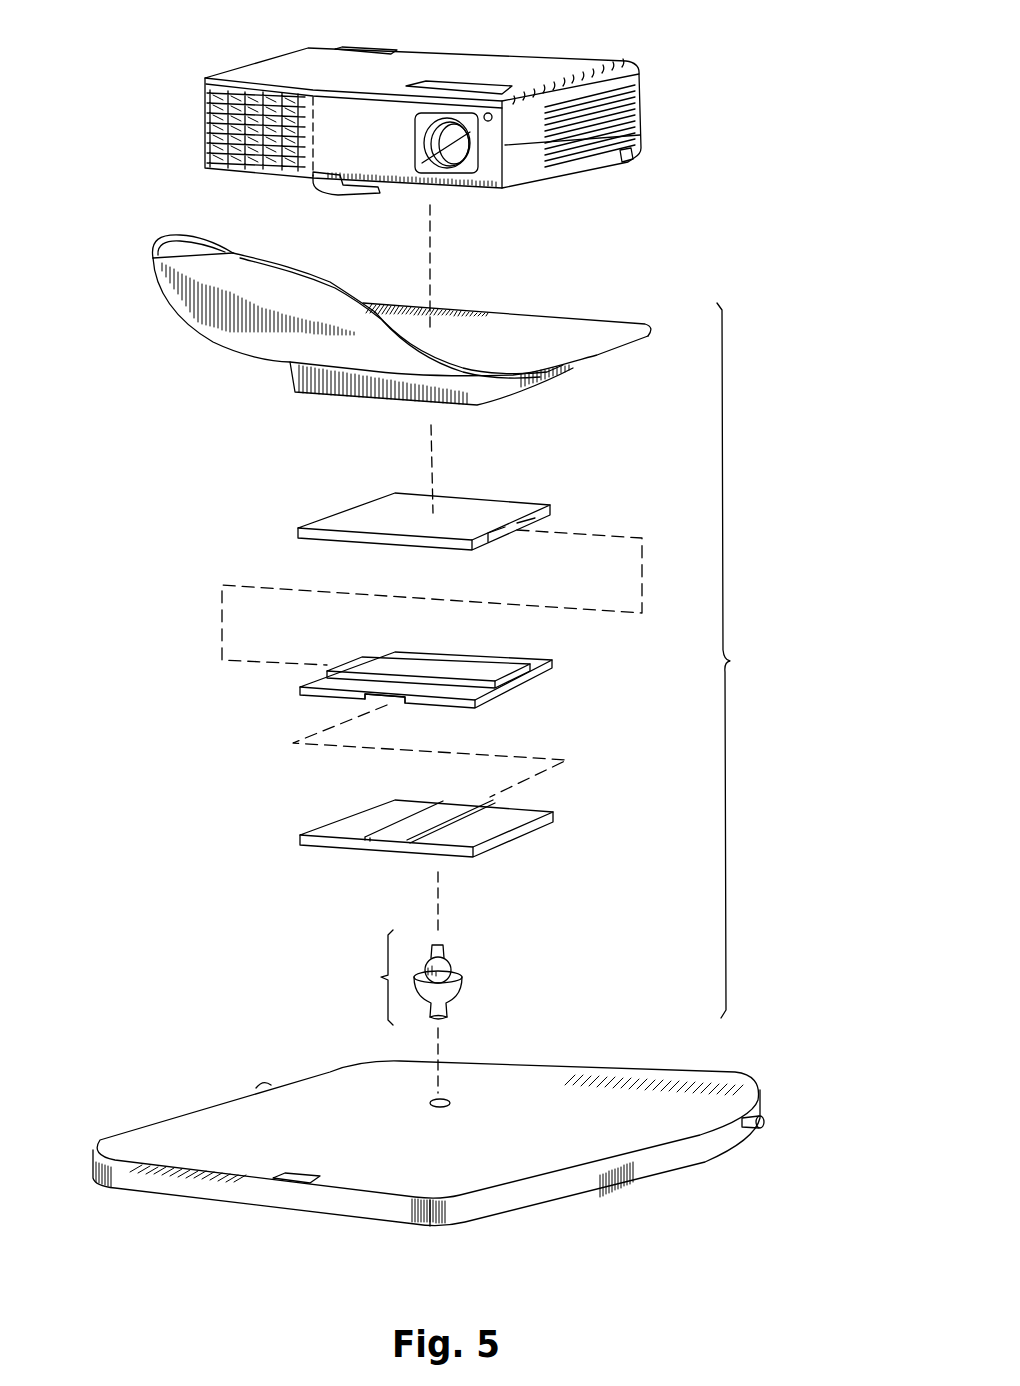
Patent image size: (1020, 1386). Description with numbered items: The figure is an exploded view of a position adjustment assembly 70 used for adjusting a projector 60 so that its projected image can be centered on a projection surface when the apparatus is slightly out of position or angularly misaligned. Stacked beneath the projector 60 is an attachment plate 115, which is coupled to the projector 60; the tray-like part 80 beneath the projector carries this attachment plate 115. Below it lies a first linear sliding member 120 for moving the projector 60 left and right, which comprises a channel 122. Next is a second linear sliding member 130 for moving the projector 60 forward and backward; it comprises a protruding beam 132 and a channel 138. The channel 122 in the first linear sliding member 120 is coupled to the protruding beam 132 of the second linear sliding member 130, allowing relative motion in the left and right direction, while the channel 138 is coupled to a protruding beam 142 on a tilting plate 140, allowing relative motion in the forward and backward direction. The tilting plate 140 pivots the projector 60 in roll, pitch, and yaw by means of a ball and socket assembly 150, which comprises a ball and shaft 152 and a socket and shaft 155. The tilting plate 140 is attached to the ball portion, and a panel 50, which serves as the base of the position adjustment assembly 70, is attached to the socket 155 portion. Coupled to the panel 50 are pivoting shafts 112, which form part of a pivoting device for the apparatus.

The projector 60 is at (487, 63).
The projector tray 80 is at (362, 320).
The attachment plate 115 is at (567, 328).
The first linear sliding member 120 is at (427, 530).
The channel 122 is at (508, 533).
The second linear sliding member 130 is at (456, 677).
The protruding beam 132 is at (367, 665).
The channel 138 is at (395, 703).
The tilting plate 140 is at (470, 817).
The protruding beam 142 is at (403, 828).
The ball and socket assembly 150 is at (413, 970).
The ball and shaft 152 is at (443, 952).
The socket and shaft 155 is at (458, 990).
The position adjustment assembly 70 is at (730, 661).
The panel 50 is at (466, 1124).
The pivoting shafts 112 is at (262, 1084).